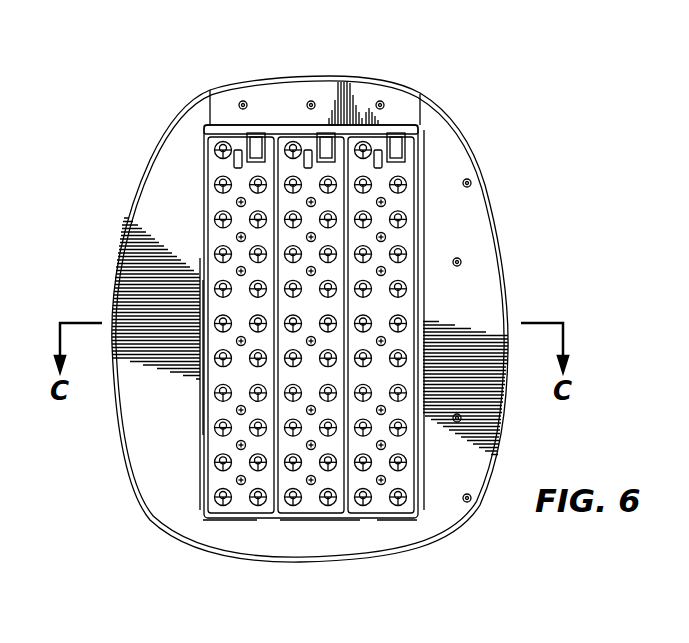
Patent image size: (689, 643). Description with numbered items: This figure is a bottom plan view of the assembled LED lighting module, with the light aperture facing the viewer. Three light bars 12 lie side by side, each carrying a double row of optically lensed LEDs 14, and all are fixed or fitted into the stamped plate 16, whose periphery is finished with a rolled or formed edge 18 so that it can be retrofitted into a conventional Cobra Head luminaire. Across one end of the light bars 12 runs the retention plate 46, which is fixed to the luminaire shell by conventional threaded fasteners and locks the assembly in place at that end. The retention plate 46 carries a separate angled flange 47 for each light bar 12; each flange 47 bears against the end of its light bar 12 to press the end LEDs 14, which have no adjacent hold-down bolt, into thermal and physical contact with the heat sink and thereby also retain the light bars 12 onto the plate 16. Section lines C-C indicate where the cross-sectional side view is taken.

The light bar 12 is at (381, 485).
The LEDs 14 is at (222, 220).
The stamped plate 16 is at (463, 215).
The rolled or formed edge 18 is at (472, 142).
The retention plate 46 is at (346, 127).
The angled flange 47 is at (204, 135).